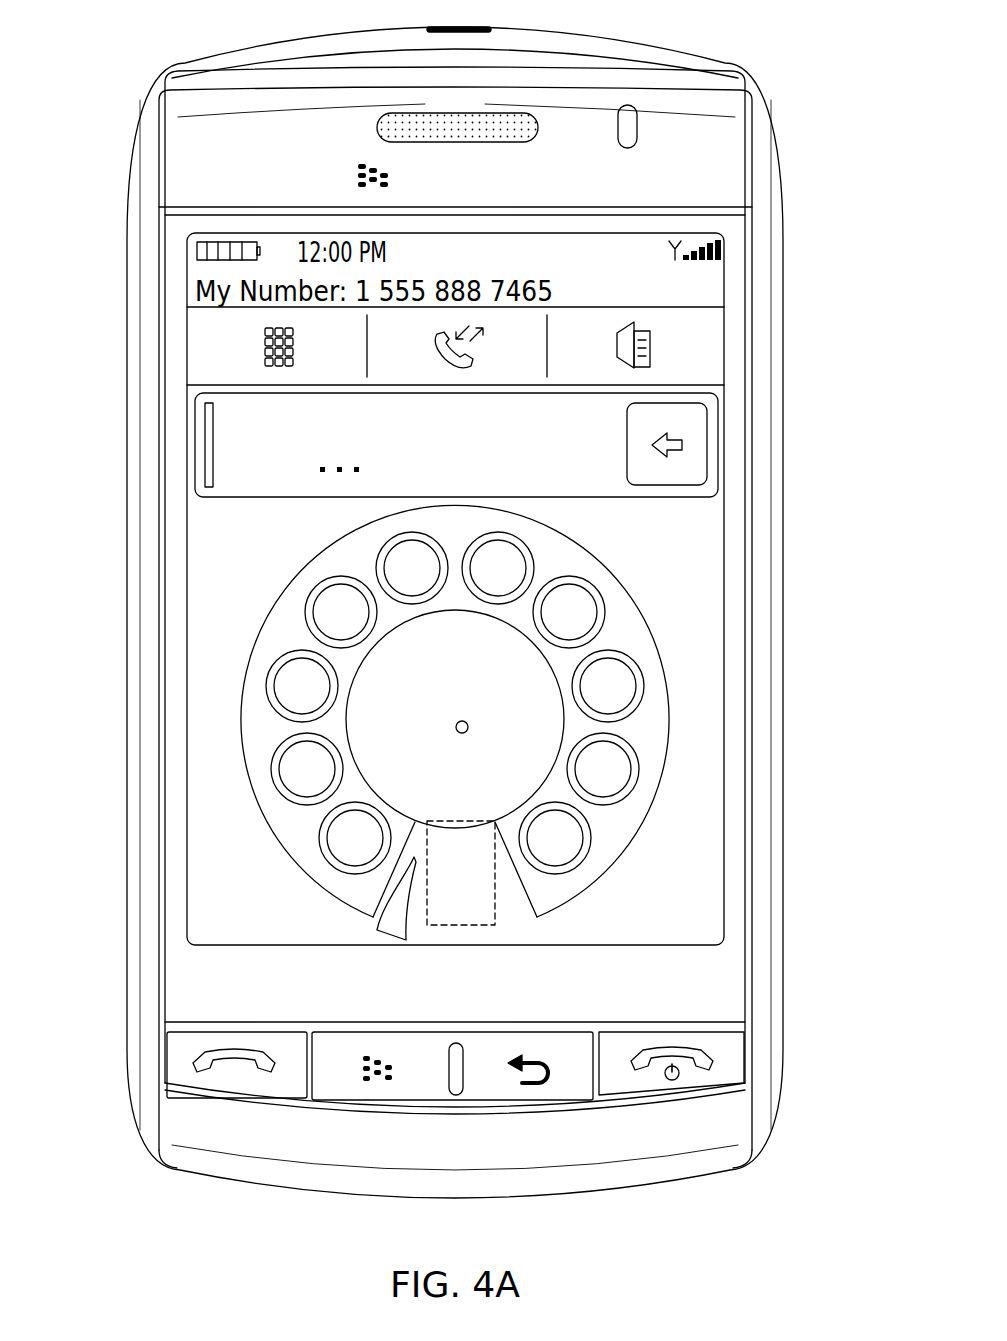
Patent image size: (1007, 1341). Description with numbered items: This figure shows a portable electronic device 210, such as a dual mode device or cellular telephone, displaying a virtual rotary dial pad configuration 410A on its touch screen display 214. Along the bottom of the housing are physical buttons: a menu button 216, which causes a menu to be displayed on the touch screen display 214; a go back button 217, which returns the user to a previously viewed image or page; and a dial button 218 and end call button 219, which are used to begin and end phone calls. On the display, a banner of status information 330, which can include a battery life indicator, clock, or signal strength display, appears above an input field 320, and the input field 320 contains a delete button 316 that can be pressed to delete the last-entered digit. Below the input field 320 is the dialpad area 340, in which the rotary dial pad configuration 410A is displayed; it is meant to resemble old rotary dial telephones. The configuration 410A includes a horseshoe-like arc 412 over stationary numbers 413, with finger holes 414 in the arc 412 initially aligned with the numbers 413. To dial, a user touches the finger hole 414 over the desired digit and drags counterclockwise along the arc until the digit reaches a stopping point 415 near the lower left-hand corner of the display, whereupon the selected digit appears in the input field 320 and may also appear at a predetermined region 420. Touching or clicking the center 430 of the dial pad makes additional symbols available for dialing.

The portable electronic device 210 is at (455, 599).
The touch screen display 214 is at (736, 663).
The menu button 216 is at (385, 1042).
The go back button 217 is at (524, 1042).
The dial button 218 is at (242, 1042).
The end call button 219 is at (669, 1042).
The delete button 316 is at (698, 445).
The input field 320 is at (240, 453).
The banner of status information 330 is at (727, 250).
The dialpad area 340 is at (100, 945).
The virtual rotary dial pad configuration 410A is at (444, 751).
The horseshoe-like arc 412 is at (628, 845).
The stationary numbers 413 is at (518, 566).
The finger hole 414 is at (571, 868).
The stopping point 415 is at (376, 923).
The predetermined region 420 is at (461, 921).
The center of the dial pad 430 is at (469, 724).